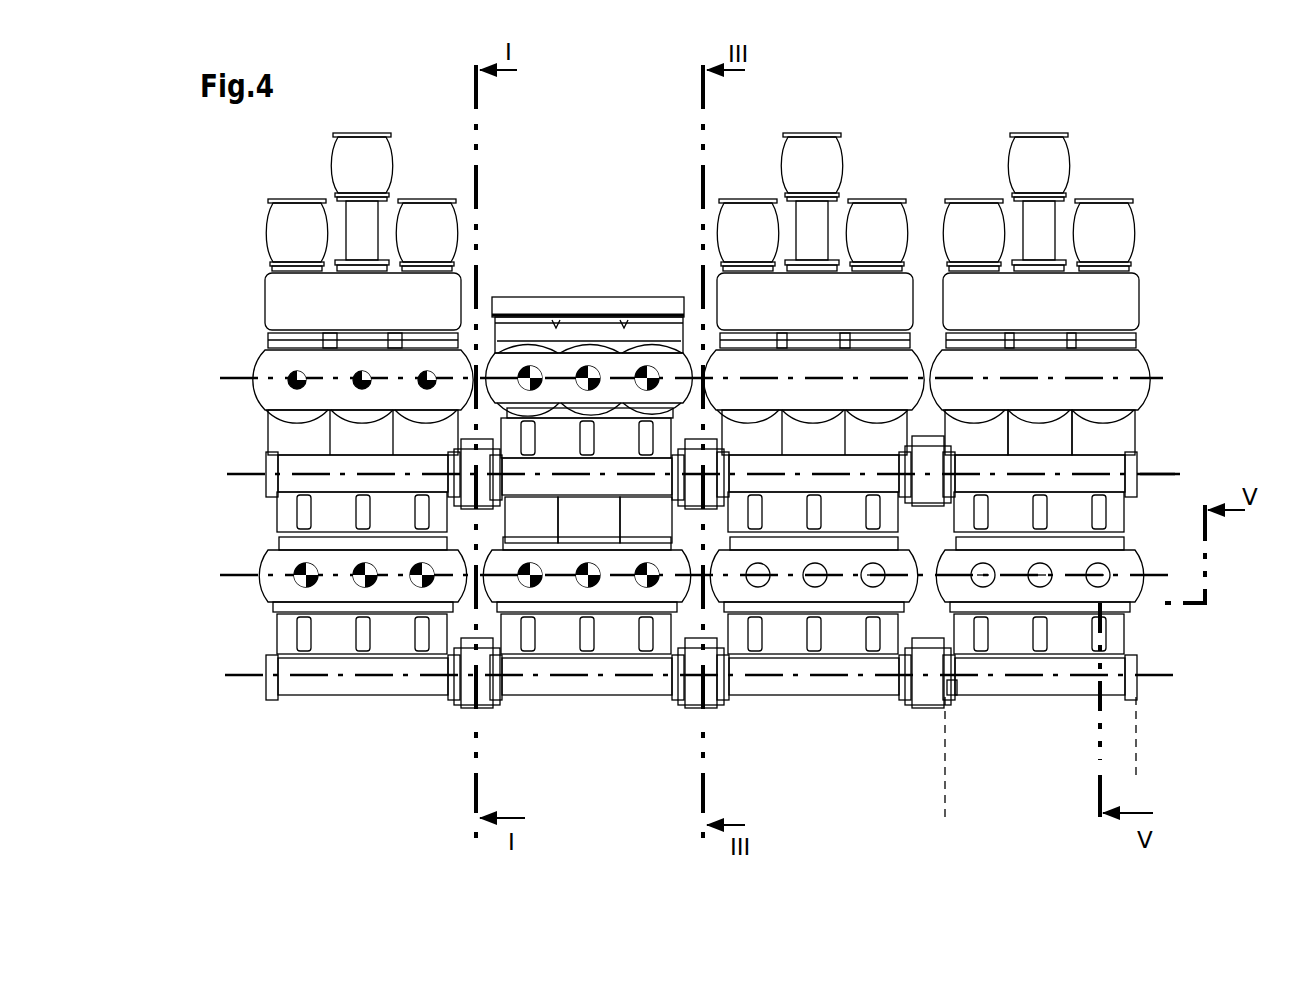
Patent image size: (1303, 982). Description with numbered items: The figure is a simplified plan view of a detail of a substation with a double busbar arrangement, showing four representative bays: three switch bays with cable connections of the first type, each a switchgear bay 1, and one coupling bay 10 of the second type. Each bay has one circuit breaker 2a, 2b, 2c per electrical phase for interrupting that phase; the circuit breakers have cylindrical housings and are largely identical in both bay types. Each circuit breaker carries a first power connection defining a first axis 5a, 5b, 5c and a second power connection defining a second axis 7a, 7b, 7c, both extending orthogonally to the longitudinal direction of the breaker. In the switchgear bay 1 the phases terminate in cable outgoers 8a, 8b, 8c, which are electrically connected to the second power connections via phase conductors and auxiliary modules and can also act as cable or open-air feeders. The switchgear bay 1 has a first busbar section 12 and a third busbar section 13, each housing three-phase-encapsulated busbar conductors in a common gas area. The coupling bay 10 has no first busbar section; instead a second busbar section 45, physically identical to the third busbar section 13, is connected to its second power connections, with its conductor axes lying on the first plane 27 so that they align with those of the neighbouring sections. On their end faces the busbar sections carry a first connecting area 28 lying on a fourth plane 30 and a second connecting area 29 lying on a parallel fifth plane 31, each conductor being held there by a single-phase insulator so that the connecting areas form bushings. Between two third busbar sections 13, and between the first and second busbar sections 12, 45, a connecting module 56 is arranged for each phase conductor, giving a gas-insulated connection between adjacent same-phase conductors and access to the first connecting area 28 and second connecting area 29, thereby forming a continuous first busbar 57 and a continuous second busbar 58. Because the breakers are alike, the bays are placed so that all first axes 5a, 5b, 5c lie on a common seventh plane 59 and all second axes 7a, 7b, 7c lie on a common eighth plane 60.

The switchgear bay 1 is at (370, 88).
The coupling bay 10 is at (592, 100).
The circuit breaker 2a is at (670, 530).
The circuit breaker 2b is at (607, 530).
The circuit breaker 2c is at (545, 530).
The first axis 5a is at (410, 592).
The first axis 5b is at (352, 592).
The first axis 5c is at (295, 592).
The second axis 7a is at (427, 369).
The second axis 7b is at (362, 369).
The second axis 7c is at (297, 369).
The cable outgoer 8a is at (426, 222).
The cable outgoer 8b is at (360, 160).
The cable outgoer 8c is at (289, 224).
The first busbar section 12 is at (300, 466).
The third busbar section 13 is at (400, 692).
The first plane 27 is at (228, 477).
The first connecting area 28 is at (1143, 456).
The second connecting area 29 is at (960, 688).
The fourth plane 30 is at (1140, 770).
The fifth plane 31 is at (945, 810).
The second busbar section 45 is at (613, 468).
The connecting module 56 is at (470, 694).
The first busbar 57 is at (1168, 471).
The second busbar 58 is at (1170, 678).
The seventh plane 59 is at (226, 578).
The eighth plane 60 is at (224, 380).